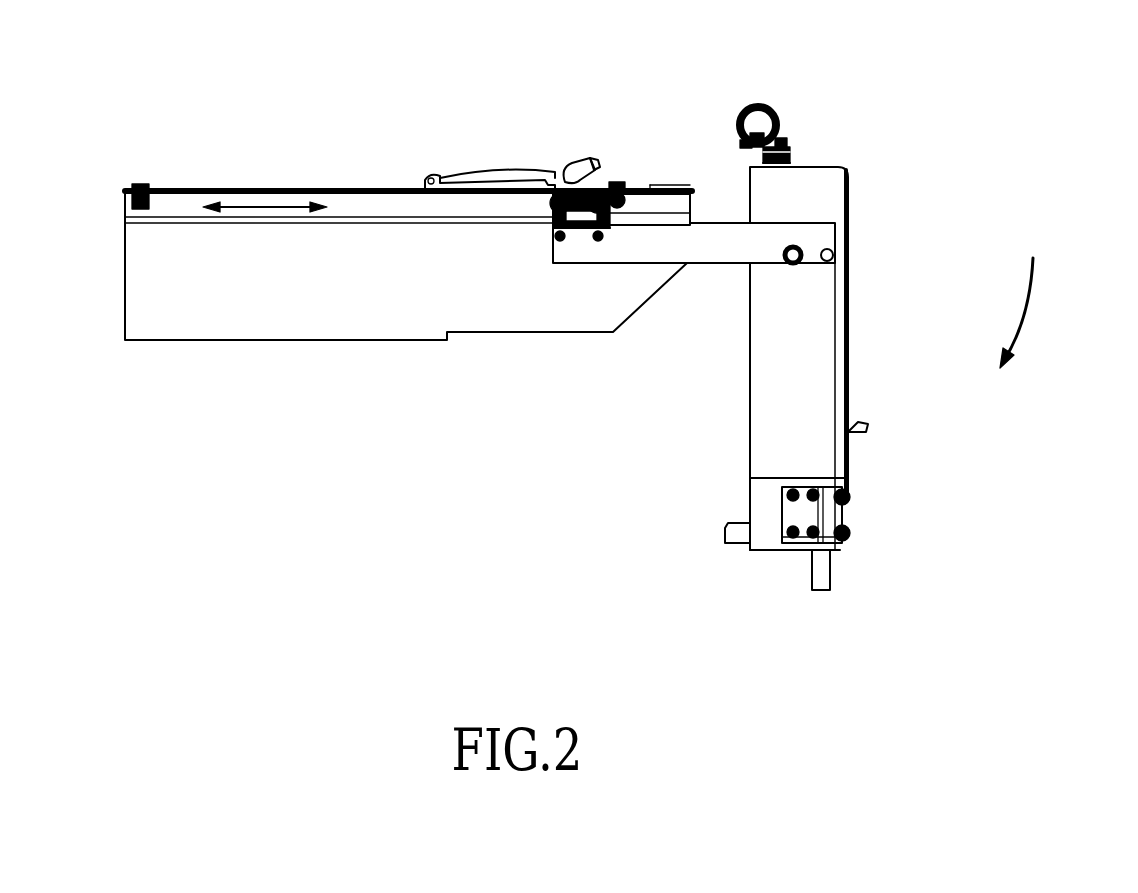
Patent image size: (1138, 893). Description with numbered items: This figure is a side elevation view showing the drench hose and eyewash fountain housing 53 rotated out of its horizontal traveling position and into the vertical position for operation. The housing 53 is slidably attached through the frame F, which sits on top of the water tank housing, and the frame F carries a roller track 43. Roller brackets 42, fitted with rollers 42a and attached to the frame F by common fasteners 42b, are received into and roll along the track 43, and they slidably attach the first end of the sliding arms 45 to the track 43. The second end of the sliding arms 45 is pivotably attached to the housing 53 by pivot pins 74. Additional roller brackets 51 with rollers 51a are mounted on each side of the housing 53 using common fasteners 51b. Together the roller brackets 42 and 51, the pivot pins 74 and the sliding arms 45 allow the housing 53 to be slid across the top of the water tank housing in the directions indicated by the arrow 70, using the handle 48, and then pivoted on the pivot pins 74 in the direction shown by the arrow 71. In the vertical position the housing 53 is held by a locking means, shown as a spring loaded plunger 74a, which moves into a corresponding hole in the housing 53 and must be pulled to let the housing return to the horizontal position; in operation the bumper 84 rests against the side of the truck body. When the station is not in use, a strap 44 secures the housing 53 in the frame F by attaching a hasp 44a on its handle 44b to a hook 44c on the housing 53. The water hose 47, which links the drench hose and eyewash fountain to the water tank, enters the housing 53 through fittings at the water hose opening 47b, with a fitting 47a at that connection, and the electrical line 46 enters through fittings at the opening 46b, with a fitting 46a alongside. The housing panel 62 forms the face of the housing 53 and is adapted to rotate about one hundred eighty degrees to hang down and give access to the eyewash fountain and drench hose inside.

The frame F is at (245, 315).
The roller track 43 is at (368, 208).
The arrow 70 is at (266, 207).
The strap 44 is at (478, 170).
The hasp 44a is at (595, 155).
The handle 44b is at (567, 165).
The hook 44c is at (868, 421).
The roller brackets 42 is at (557, 223).
The rollers 42a is at (605, 185).
The common fasteners 42b is at (553, 238).
The sliding arms 45 is at (710, 253).
The drench hose and eyewash fountain housing 53 is at (767, 357).
The housing panel 62 is at (850, 363).
The pivot pins 74 is at (817, 263).
The spring loaded plunger 74a is at (836, 256).
The electrical line 46 is at (737, 127).
The bolt nut 46a is at (790, 162).
The opening 46b is at (790, 150).
The water hose 47 is at (755, 130).
The eye ring base 47a is at (763, 160).
The water hose opening 47b is at (787, 140).
The roller brackets 51 is at (793, 510).
The rollers 51a is at (850, 495).
The common fasteners 51b is at (792, 538).
The handle 48 is at (827, 568).
The bumper 84 is at (732, 540).
The arrow 71 is at (1027, 318).